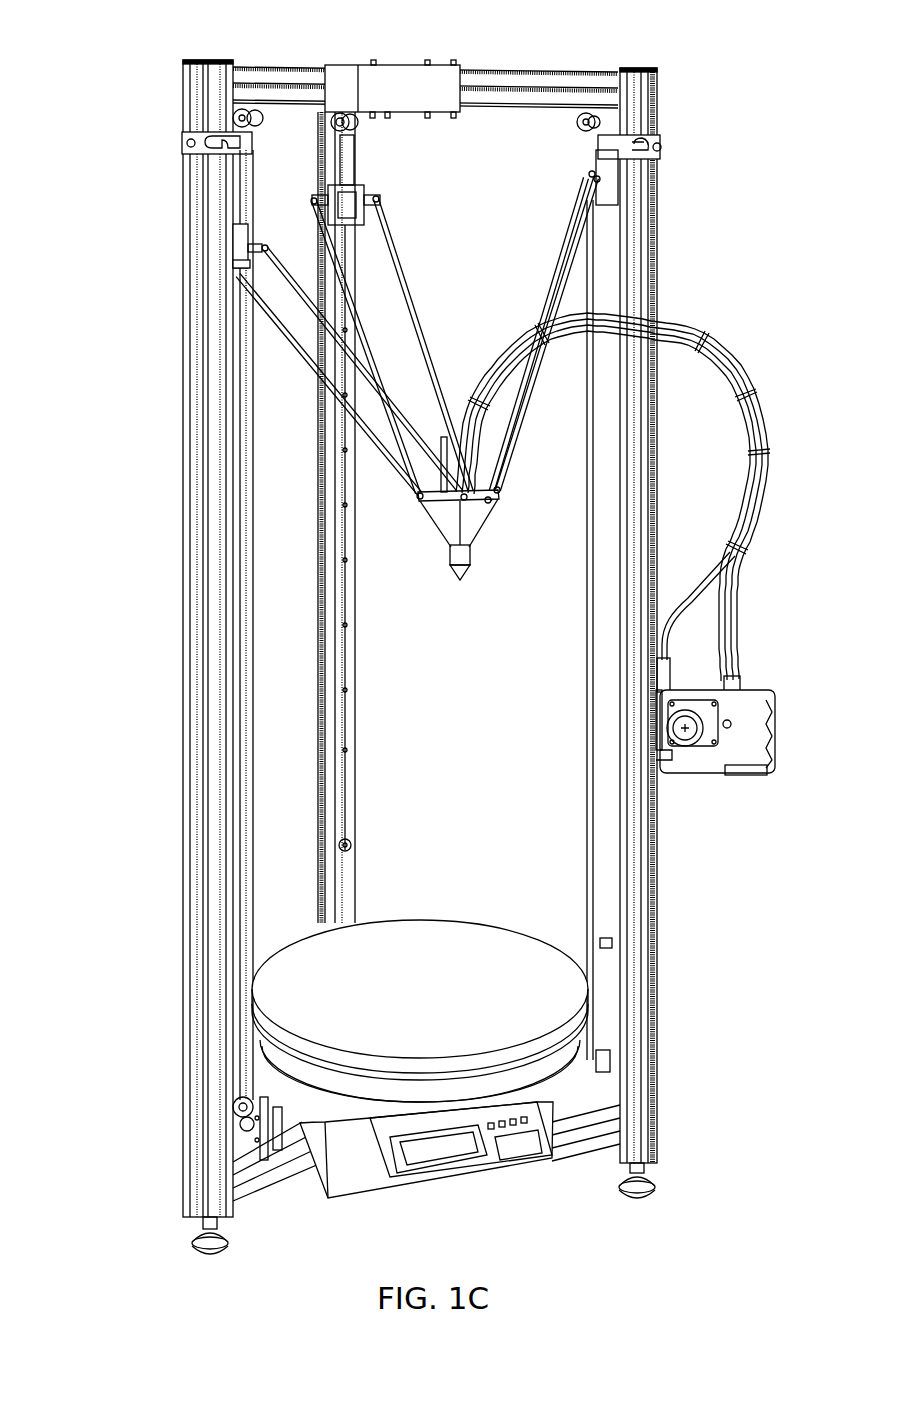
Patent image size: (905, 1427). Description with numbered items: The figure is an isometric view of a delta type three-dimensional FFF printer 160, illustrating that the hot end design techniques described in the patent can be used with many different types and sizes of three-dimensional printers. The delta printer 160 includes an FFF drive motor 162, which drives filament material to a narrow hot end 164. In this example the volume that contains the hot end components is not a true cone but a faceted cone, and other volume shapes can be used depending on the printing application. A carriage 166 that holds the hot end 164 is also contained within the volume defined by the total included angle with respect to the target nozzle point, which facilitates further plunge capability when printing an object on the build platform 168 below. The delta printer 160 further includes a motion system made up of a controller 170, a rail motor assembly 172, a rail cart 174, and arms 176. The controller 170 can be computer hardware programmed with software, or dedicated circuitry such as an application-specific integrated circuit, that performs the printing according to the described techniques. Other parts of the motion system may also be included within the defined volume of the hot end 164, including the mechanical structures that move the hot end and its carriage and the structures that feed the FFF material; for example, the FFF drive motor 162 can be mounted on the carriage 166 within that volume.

The delta type 3D FFF printer 160 is at (148, 61).
The FFF drive motor 162 is at (690, 745).
The hot end 164 is at (462, 606).
The carriage 166 is at (492, 504).
The build platform 168 is at (457, 957).
The controller 170 is at (500, 1163).
The rail motor assembly 172 is at (247, 1133).
The rail cart 174 is at (240, 248).
The arms 176 is at (397, 410).